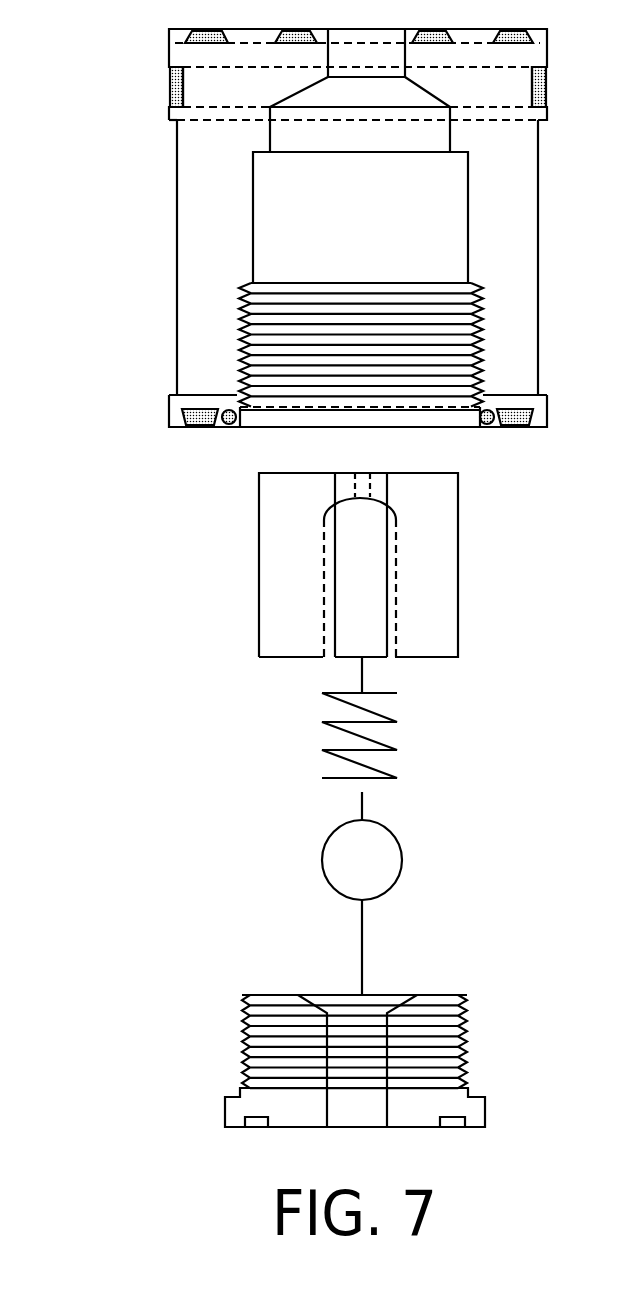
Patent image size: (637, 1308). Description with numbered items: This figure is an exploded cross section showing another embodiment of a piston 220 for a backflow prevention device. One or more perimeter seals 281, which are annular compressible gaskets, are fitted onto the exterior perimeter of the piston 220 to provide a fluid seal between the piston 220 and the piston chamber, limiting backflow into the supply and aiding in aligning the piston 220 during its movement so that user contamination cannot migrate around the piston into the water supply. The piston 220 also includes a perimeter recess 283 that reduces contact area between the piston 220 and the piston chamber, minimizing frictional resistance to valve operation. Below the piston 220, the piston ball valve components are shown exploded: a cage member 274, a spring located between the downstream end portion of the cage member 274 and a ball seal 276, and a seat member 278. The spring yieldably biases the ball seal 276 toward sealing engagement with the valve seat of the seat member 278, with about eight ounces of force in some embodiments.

The piston 220 is at (97, 188).
The perimeter seal 281 is at (160, 82).
The perimeter recess 283 is at (155, 299).
The cage member 274 is at (235, 585).
The ball seal 276 is at (297, 852).
The seat member 278 is at (205, 1037).